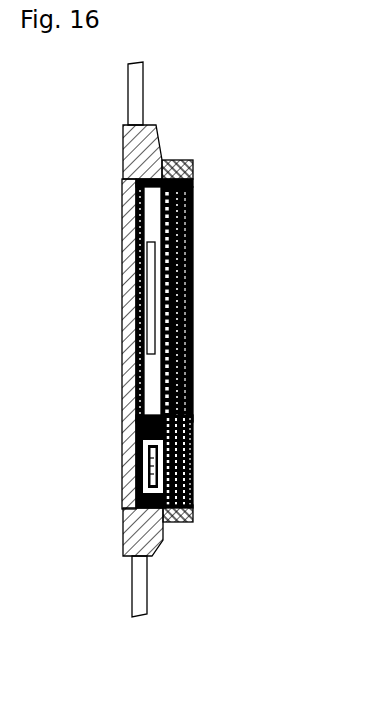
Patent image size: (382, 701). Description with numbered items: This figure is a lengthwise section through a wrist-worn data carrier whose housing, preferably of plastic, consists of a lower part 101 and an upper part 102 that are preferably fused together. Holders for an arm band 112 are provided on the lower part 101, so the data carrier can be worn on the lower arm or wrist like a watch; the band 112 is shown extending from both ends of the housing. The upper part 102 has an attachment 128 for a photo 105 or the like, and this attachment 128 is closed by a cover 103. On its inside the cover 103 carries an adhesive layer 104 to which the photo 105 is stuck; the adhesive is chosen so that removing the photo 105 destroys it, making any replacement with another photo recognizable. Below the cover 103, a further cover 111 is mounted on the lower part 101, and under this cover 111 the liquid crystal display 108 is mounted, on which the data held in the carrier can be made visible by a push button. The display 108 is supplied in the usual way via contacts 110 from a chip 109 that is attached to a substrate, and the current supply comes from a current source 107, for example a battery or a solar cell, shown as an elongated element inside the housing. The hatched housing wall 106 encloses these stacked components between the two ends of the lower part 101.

The arm band 112 is at (142, 87).
The lower part 101 is at (145, 143).
The upper part 102 is at (192, 163).
The attachment 128 is at (196, 181).
The photo 105 is at (194, 213).
The adhesive layer 104 is at (190, 245).
The cover 103 is at (186, 283).
The current source 107 is at (147, 315).
The housing wall 106 is at (124, 380).
The contacts 110 is at (137, 440).
The chip 109 is at (147, 483).
The liquid crystal display 108 is at (190, 454).
The cover 111 is at (190, 496).